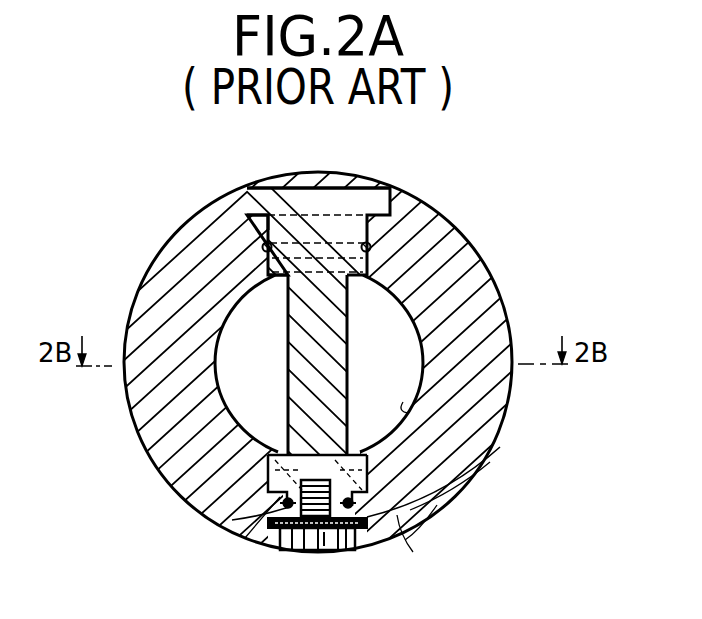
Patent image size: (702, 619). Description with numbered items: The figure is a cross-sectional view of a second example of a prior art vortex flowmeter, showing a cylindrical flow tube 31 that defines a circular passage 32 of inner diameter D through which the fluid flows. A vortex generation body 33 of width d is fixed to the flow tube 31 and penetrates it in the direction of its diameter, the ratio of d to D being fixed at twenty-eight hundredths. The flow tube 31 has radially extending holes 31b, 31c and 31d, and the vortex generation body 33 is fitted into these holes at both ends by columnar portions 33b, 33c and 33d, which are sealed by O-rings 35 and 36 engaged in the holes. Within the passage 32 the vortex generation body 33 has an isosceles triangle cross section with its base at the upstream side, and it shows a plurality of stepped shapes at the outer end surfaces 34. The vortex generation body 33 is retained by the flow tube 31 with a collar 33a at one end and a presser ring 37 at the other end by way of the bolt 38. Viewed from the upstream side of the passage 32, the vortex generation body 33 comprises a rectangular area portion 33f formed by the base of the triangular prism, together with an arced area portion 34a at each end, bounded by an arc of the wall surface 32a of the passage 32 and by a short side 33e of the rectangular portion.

The flow tube 31 is at (418, 203).
The hole 31b is at (262, 278).
The hole 31c is at (278, 453).
The hole 31d is at (352, 452).
The passage 32 is at (402, 323).
The wall surface 32a is at (486, 452).
The vortex generation body 33 is at (288, 369).
The collar 33a is at (350, 190).
The columnar portion 33b is at (262, 228).
The columnar portion 33c is at (432, 513).
The columnar portion 33d is at (424, 549).
The short side 33e is at (349, 317).
The rectangular area portion 33f is at (349, 366).
The outer end surfaces 34 is at (352, 285).
The arced area portion 34a is at (283, 288).
The O-ring 35 is at (378, 245).
The O-ring 36 is at (280, 500).
The presser ring 37 is at (281, 546).
The bolt 38 is at (320, 550).